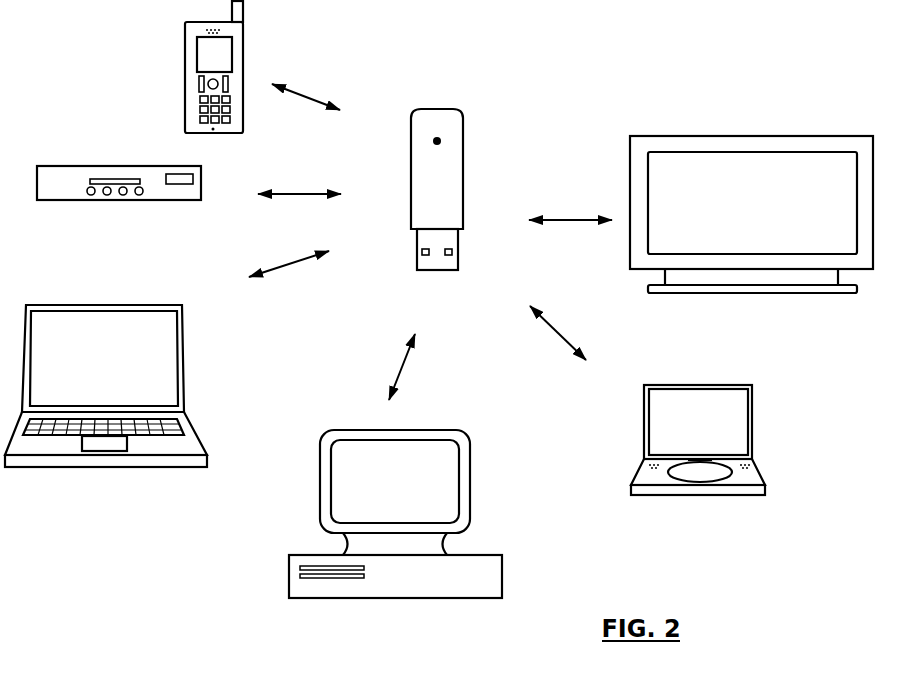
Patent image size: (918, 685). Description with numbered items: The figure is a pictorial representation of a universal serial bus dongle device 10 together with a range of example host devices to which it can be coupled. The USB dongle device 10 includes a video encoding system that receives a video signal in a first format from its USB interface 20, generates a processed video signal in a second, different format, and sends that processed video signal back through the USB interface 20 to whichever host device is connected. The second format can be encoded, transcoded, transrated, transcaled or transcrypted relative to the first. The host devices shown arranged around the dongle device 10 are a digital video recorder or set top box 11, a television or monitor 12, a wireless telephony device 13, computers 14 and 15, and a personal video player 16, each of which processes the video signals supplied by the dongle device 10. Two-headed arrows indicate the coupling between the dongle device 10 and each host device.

The USB dongle device 10 is at (427, 216).
The digital video recorder/set top box 11 is at (47, 192).
The television or monitor 12 is at (657, 174).
The wireless telephony device 13 is at (203, 64).
The computer 14 is at (49, 342).
The computer 15 is at (348, 474).
The personal video player 16 is at (658, 414).
The USB interface 20 is at (439, 293).